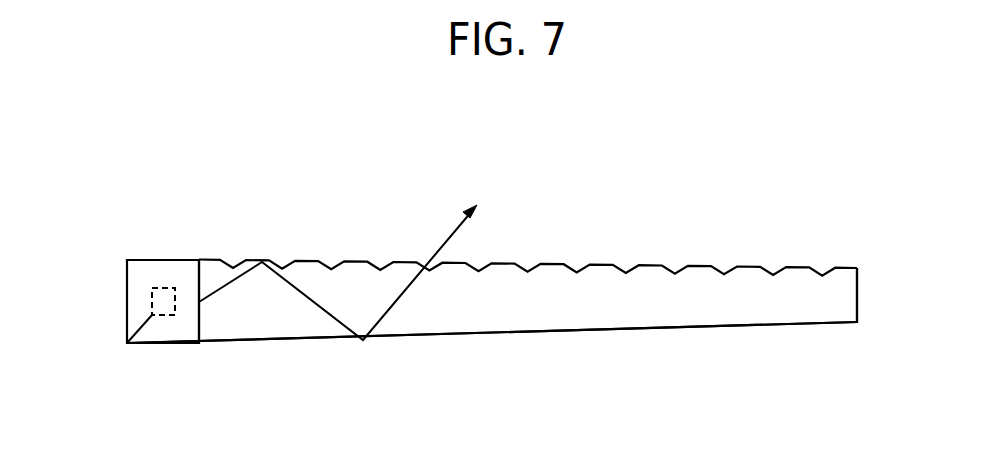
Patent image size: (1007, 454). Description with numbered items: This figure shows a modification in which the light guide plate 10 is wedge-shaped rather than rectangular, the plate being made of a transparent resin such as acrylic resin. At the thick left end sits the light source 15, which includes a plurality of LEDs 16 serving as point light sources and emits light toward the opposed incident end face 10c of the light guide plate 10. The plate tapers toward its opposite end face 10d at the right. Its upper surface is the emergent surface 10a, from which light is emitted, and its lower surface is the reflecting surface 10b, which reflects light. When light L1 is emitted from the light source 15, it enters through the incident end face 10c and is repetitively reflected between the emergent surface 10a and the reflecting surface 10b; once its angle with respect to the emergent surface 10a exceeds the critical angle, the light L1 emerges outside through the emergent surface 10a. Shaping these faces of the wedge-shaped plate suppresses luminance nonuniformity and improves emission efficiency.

The light guide plate 10 is at (840, 289).
The emergent surface 10a is at (700, 265).
The reflecting surface 10b is at (735, 327).
The incident end face 10c is at (199, 306).
The opposite end surface 10d is at (857, 308).
The light source 15 is at (146, 272).
The LED 16 is at (128, 332).
The light L1 is at (345, 259).